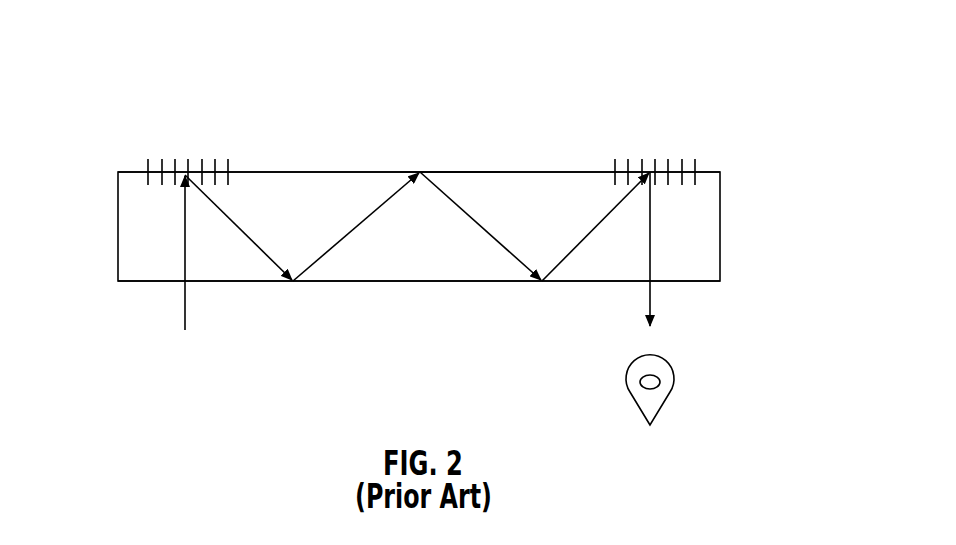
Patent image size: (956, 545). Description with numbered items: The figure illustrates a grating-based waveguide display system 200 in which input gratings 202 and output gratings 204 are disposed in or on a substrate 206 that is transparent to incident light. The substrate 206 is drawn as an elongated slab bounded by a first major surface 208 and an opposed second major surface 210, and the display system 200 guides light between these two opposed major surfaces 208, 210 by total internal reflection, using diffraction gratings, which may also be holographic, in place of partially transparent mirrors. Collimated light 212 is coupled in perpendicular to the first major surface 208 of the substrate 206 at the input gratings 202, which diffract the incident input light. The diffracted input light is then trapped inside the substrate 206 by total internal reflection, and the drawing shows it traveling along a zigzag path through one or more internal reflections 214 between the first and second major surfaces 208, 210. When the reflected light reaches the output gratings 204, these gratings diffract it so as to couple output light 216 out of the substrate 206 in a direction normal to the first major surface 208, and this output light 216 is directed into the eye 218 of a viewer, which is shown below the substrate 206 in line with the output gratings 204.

The grating-based waveguide display system 200 is at (624, 61).
The input gratings 202 is at (173, 166).
The output gratings 204 is at (656, 165).
The substrate 206 is at (318, 178).
The first major surface 208 is at (346, 284).
The second major surface 210 is at (448, 171).
The collimated light 212 is at (184, 290).
The internal reflections 214 is at (244, 231).
The output light 216 is at (654, 300).
The eye 218 is at (668, 401).